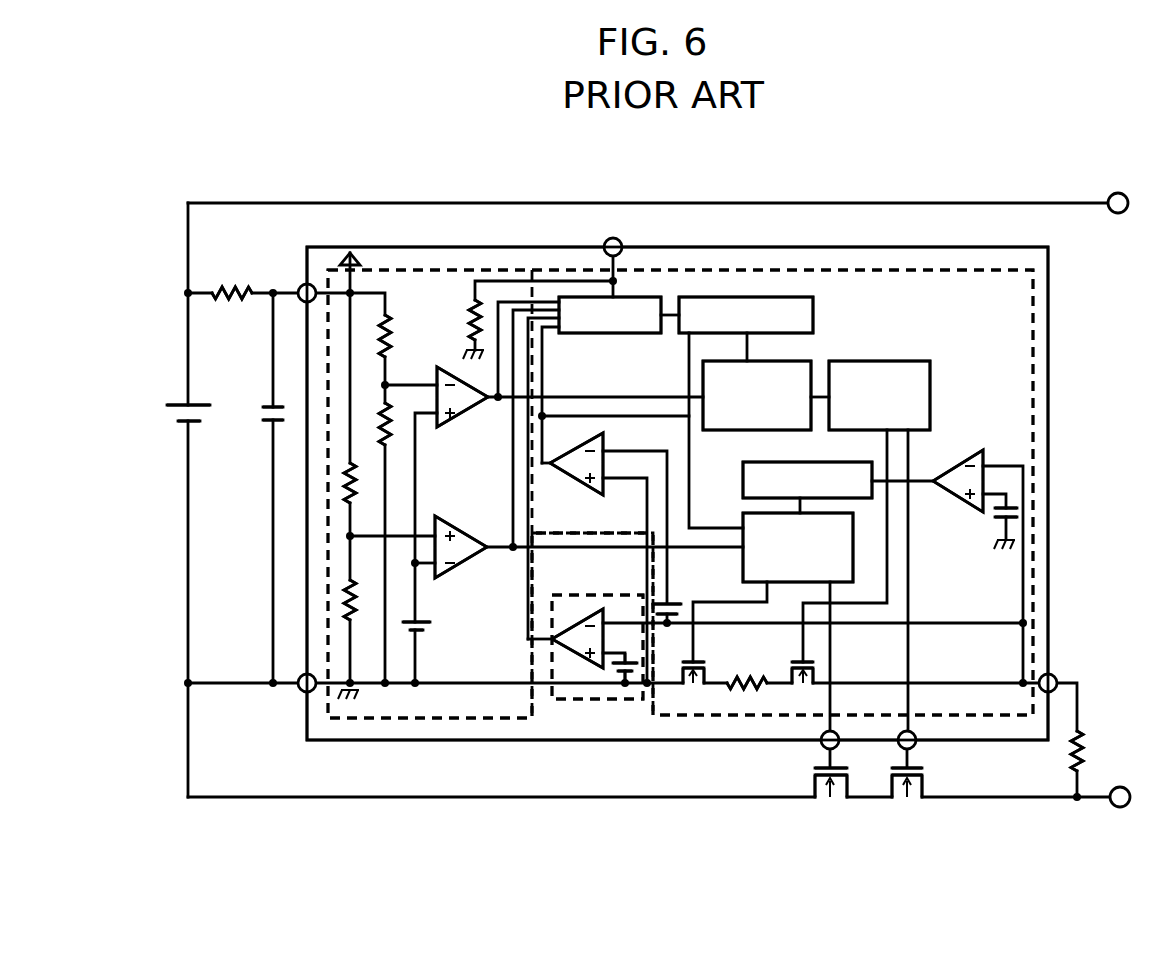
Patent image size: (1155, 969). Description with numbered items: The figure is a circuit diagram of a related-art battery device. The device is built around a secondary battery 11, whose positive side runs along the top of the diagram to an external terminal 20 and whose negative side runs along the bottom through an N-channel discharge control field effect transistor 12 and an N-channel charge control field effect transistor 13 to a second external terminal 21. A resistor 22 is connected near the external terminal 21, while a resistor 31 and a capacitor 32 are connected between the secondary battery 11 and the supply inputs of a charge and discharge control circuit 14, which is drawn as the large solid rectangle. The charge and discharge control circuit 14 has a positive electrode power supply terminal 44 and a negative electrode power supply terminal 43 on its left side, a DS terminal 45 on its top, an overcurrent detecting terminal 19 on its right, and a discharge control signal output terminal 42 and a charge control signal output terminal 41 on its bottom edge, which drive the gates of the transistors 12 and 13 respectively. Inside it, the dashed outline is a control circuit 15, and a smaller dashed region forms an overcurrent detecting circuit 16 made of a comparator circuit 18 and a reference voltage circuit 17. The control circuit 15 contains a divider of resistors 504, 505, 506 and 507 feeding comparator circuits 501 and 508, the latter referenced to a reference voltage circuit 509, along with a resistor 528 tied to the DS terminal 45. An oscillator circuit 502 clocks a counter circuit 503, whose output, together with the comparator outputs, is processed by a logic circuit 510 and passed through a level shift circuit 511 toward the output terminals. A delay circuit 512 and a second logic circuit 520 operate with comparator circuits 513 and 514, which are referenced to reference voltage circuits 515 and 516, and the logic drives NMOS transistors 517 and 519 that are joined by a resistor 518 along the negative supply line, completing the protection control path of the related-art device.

The secondary battery 11 is at (178, 424).
The N-channel discharge control field effect transistor 12 is at (830, 806).
The N-channel charge control field effect transistor 13 is at (907, 806).
The charge and discharge control circuit 14 is at (1048, 280).
The control circuit 15 is at (1033, 318).
The overcurrent detecting circuit 16 is at (583, 694).
The reference voltage circuit 17 is at (617, 672).
The comparator circuit 18 is at (586, 620).
The overcurrent detecting terminal 19 is at (1055, 672).
The external terminal 20 is at (1118, 193).
The external terminal 21 is at (1118, 810).
The resistor 22 is at (1088, 748).
The resistor 31 is at (235, 285).
The capacitor 32 is at (265, 425).
The charge control signal output terminal 41 is at (920, 747).
The discharge control signal output terminal 42 is at (815, 746).
The negative electrode power supply terminal 43 is at (302, 696).
The positive electrode power supply terminal 44 is at (298, 284).
The DS terminal 45 is at (606, 240).
The comparator circuit 501 is at (437, 364).
The oscillator circuit 502 is at (636, 297).
The counter circuit 503 is at (742, 297).
The resistor 504 is at (373, 328).
The resistor 505 is at (338, 478).
The resistor 506 is at (398, 425).
The resistor 507 is at (338, 594).
The comparator circuit 508 is at (460, 567).
The reference voltage circuit 509 is at (440, 622).
The logic circuit 510 is at (805, 360).
The level shift circuit 511 is at (930, 378).
The delay circuit 512 is at (748, 480).
The comparator circuit 513 is at (575, 471).
The comparator circuit 514 is at (975, 505).
The reference voltage circuit 515 is at (650, 600).
The reference voltage circuit 516 is at (1018, 507).
The NMOS transistor 517 is at (667, 686).
The resistor 518 is at (735, 688).
The NMOS transistor 519 is at (803, 690).
The logic circuit 520 is at (745, 567).
The resistor 528 is at (487, 300).